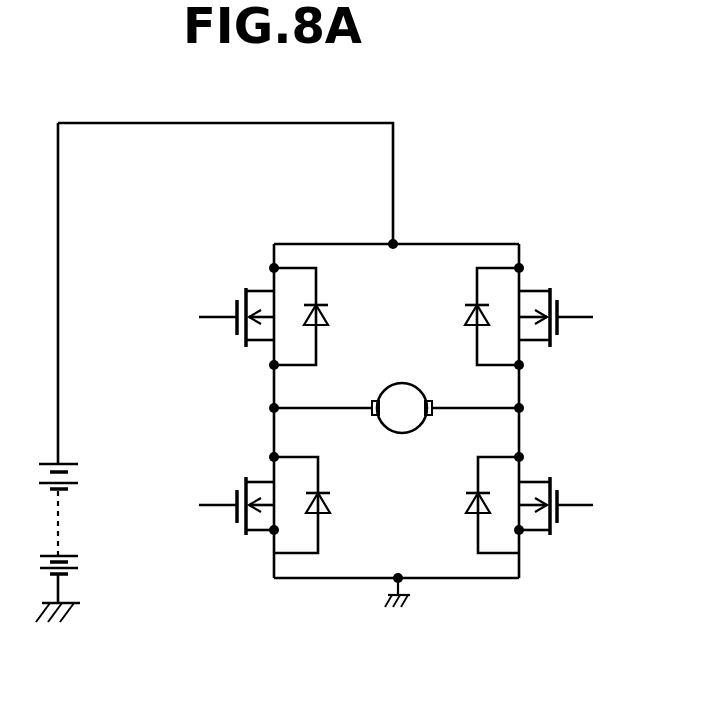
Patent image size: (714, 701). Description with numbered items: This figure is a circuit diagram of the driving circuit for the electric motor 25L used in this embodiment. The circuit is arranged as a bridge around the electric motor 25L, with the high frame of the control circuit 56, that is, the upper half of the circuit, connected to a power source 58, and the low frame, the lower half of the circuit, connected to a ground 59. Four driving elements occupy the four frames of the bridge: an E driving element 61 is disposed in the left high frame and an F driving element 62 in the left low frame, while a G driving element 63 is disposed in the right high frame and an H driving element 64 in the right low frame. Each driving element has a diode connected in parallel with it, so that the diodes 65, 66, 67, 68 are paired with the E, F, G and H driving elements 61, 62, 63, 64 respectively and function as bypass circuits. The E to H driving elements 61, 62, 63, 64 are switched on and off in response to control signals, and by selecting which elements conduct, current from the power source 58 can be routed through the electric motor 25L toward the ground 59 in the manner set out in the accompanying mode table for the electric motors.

The control circuit 56 is at (437, 244).
The power source 58 is at (72, 483).
The ground 59 is at (406, 594).
The E driving element 61 is at (258, 291).
The F driving element 62 is at (258, 482).
The G driving element 63 is at (535, 291).
The H driving element 64 is at (535, 482).
The diode 65 is at (327, 318).
The diode 66 is at (330, 511).
The diode 67 is at (468, 318).
The diode 68 is at (466, 511).
The electric motor 25L is at (402, 433).